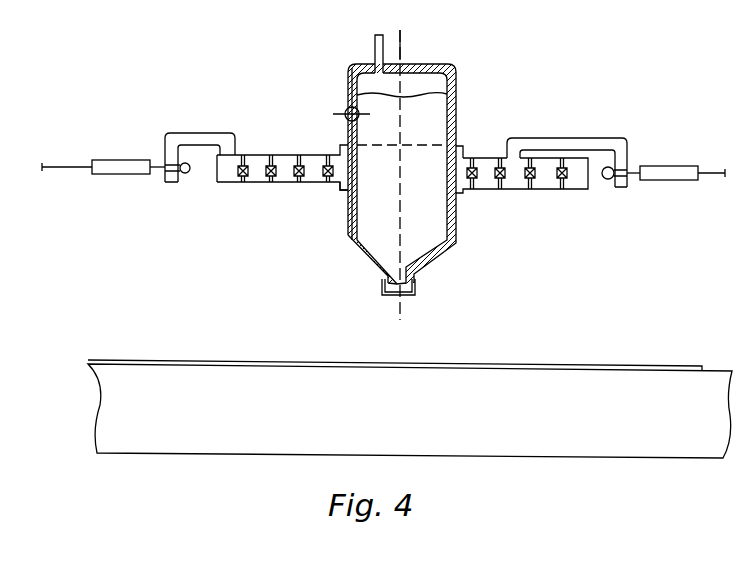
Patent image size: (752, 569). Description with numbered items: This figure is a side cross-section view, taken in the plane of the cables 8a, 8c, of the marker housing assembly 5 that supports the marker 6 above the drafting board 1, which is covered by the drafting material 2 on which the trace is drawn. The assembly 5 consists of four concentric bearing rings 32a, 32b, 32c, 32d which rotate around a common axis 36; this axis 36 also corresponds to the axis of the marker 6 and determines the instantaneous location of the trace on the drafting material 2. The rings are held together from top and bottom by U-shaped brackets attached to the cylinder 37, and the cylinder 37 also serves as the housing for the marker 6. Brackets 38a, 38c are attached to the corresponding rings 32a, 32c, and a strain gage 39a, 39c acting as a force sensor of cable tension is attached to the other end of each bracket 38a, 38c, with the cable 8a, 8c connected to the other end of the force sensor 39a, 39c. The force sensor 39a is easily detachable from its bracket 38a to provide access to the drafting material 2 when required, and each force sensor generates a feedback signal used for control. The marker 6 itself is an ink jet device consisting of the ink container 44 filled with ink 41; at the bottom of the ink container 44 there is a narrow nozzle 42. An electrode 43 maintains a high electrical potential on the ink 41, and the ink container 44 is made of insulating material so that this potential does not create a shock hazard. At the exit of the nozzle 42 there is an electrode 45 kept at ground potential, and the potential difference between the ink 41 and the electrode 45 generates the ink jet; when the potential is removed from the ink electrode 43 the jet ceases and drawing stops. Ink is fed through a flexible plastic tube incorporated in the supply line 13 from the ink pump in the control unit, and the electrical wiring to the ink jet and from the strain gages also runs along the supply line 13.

The drafting board 1 is at (580, 425).
The drafting material 2 is at (600, 365).
The marker housing assembly 5 is at (283, 183).
The marker 6 is at (457, 80).
The cable 8a is at (63, 164).
The cable 8c is at (713, 173).
The supply line 13 is at (375, 55).
The bearing ring 32a is at (236, 180).
The bearing ring 32b is at (264, 152).
The bearing ring 32c is at (515, 185).
The bearing ring 32d is at (488, 162).
The common axis 36 is at (407, 53).
The cylinder 37 is at (340, 195).
The bracket 38a is at (166, 133).
The bracket 38c is at (555, 142).
The strain gage 39a is at (120, 169).
The strain gage 39c is at (667, 182).
The ink 41 is at (428, 138).
The nozzle 42 is at (393, 293).
The electrode 43 is at (340, 111).
The ink container 44 is at (350, 80).
The electrode 45 is at (385, 283).